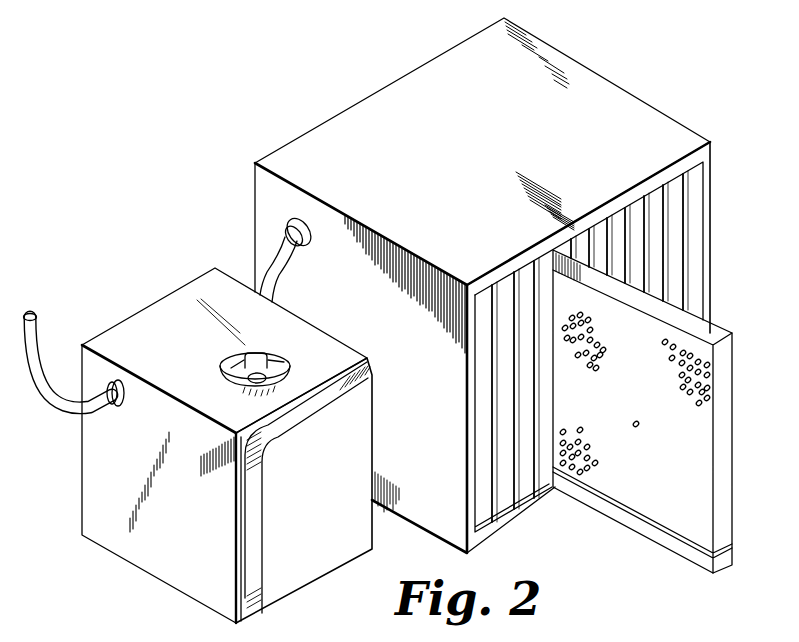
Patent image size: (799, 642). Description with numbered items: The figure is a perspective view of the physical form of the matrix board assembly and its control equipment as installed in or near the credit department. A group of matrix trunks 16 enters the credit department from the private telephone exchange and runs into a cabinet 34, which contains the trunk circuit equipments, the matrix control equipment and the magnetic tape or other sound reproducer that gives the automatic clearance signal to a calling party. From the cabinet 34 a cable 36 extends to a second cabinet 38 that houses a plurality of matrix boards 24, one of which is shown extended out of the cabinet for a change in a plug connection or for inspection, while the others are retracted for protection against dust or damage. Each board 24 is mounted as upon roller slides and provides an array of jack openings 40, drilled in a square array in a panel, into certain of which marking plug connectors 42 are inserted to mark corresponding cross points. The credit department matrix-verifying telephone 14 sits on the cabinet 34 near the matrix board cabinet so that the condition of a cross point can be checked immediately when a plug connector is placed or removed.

The second cabinet 38 is at (301, 143).
The matrix board 24 is at (697, 210).
The jack openings 40 is at (667, 347).
The marking plug connectors 42 is at (700, 405).
The cable 36 is at (273, 270).
The matrix trunks 16 is at (52, 331).
The cabinet 34 is at (152, 563).
The matrix-verifying telephone 14 is at (233, 382).